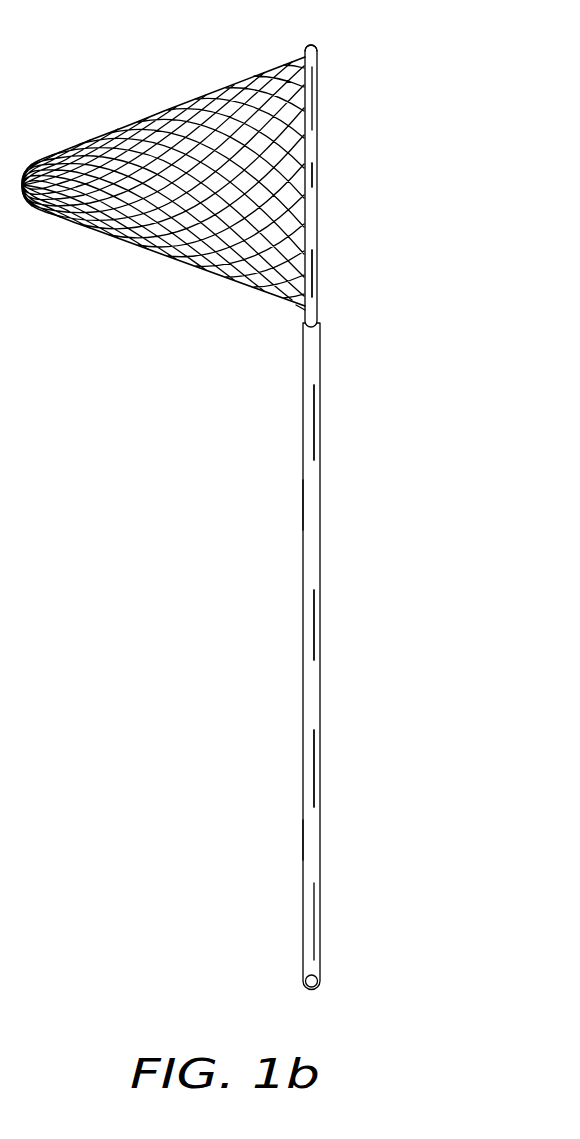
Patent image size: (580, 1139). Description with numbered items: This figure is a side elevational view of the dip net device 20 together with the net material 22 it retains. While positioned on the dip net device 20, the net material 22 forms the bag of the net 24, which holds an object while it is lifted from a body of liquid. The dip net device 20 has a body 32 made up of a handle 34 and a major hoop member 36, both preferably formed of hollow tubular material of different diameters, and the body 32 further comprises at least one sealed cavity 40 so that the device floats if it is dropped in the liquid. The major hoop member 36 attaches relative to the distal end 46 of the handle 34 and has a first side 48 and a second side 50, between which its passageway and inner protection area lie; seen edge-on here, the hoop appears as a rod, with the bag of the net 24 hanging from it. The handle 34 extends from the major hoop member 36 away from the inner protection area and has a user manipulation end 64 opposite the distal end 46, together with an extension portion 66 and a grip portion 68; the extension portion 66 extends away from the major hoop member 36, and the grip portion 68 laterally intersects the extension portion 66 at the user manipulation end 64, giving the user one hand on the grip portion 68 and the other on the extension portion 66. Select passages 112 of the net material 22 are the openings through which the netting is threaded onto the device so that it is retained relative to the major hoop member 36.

The dip net device 20 is at (317, 288).
The net material 22 is at (152, 240).
The bag of the net 24 is at (176, 120).
The body 32 is at (303, 618).
The handle 34 is at (303, 502).
The major hoop member 36 is at (317, 145).
The sealed cavity 40 is at (303, 727).
The distal end 46 is at (303, 377).
The first side 48 is at (317, 207).
The second side 50 is at (304, 55).
The user manipulation end 64 is at (303, 837).
The extension portion 66 is at (303, 436).
The grip portion 68 is at (305, 988).
The select passages 112 is at (282, 297).